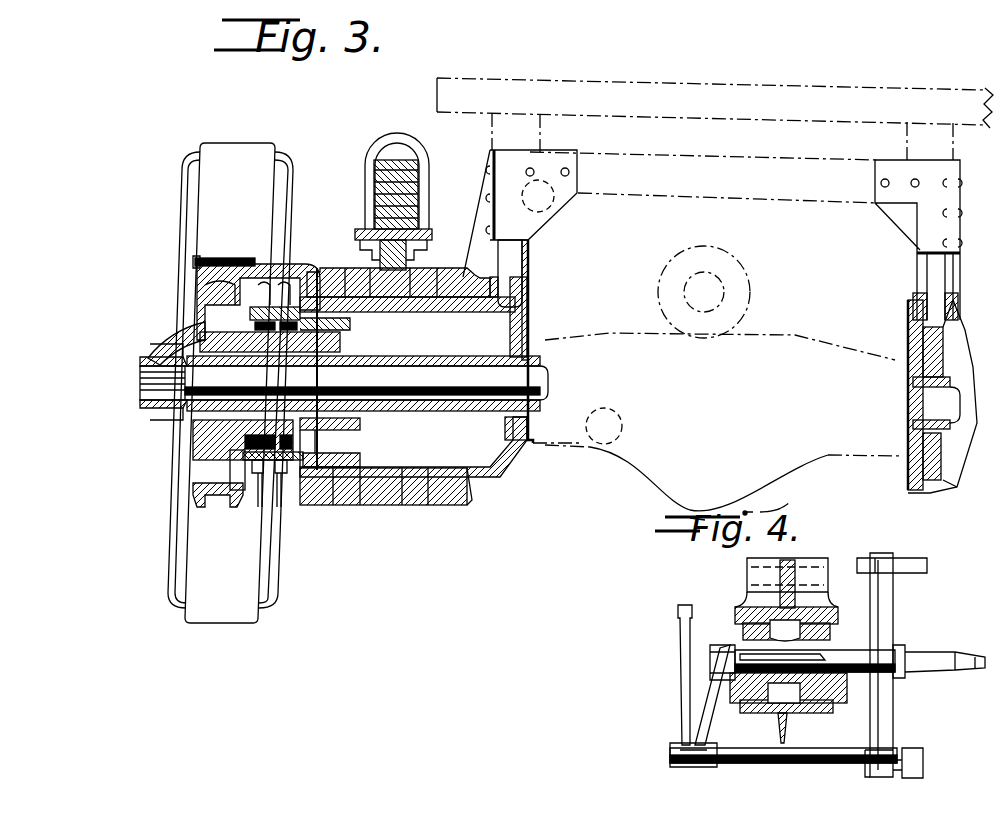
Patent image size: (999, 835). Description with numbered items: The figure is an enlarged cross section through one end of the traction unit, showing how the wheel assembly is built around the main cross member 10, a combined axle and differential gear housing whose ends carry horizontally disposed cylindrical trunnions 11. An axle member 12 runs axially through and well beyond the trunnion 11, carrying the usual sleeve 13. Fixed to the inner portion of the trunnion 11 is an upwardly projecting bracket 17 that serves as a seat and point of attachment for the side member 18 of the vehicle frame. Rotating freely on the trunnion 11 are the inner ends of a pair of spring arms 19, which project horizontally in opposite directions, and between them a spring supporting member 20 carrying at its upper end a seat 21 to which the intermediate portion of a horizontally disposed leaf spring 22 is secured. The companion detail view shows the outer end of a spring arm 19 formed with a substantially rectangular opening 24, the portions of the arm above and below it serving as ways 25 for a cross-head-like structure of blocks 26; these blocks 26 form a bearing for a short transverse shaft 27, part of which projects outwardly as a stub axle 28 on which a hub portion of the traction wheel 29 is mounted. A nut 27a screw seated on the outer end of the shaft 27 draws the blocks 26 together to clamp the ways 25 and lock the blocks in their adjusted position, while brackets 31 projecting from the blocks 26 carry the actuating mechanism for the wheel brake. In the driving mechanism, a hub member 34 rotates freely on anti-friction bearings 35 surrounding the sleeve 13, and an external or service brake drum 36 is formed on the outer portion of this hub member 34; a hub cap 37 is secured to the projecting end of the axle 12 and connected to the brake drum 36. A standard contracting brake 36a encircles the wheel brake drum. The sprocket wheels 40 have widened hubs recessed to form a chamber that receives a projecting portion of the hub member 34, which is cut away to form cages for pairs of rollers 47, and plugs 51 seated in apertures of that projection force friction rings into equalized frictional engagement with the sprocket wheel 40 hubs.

In FIG. 3, the main cross member 10 is at (604, 426).
In FIG. 3, the trunnion 11 is at (440, 358).
In FIG. 3, the axle member 12 is at (535, 345).
In FIG. 3, the sleeve 13 is at (912, 392).
In FIG. 3, the bracket 17 is at (528, 241).
In FIG. 3, the side member 18 is at (538, 196).
In FIG. 3, the spring arm 19 is at (447, 506).
In FIG. 3, the spring supporting member 20 is at (385, 506).
In FIG. 3, the seat 21 is at (360, 230).
In FIG. 3, the leaf spring 22 is at (392, 165).
In FIG. 4, the rectangular opening 24 is at (779, 718).
In FIG. 4, the ways 25 is at (745, 700).
In FIG. 4, the block 26 is at (815, 712).
In FIG. 4, the shaft 27 is at (815, 660).
In FIG. 4, the nut 27a is at (735, 655).
In FIG. 4, the stub axle 28 is at (925, 650).
In FIG. 3, the traction wheel 29 is at (230, 383).
In FIG. 4, the bracket 31 is at (890, 714).
In FIG. 3, the hub member 34 is at (344, 383).
In FIG. 3, the anti-friction bearing 35 is at (185, 418).
In FIG. 3, the service brake drum 36 is at (237, 300).
In FIG. 3, the contracting brake 36a is at (248, 242).
In FIG. 3, the hub cap 37 is at (165, 352).
In FIG. 3, the sprocket wheel 40 is at (275, 306).
In FIG. 3, the roller 47 is at (235, 322).
In FIG. 3, the plug 51 is at (240, 440).